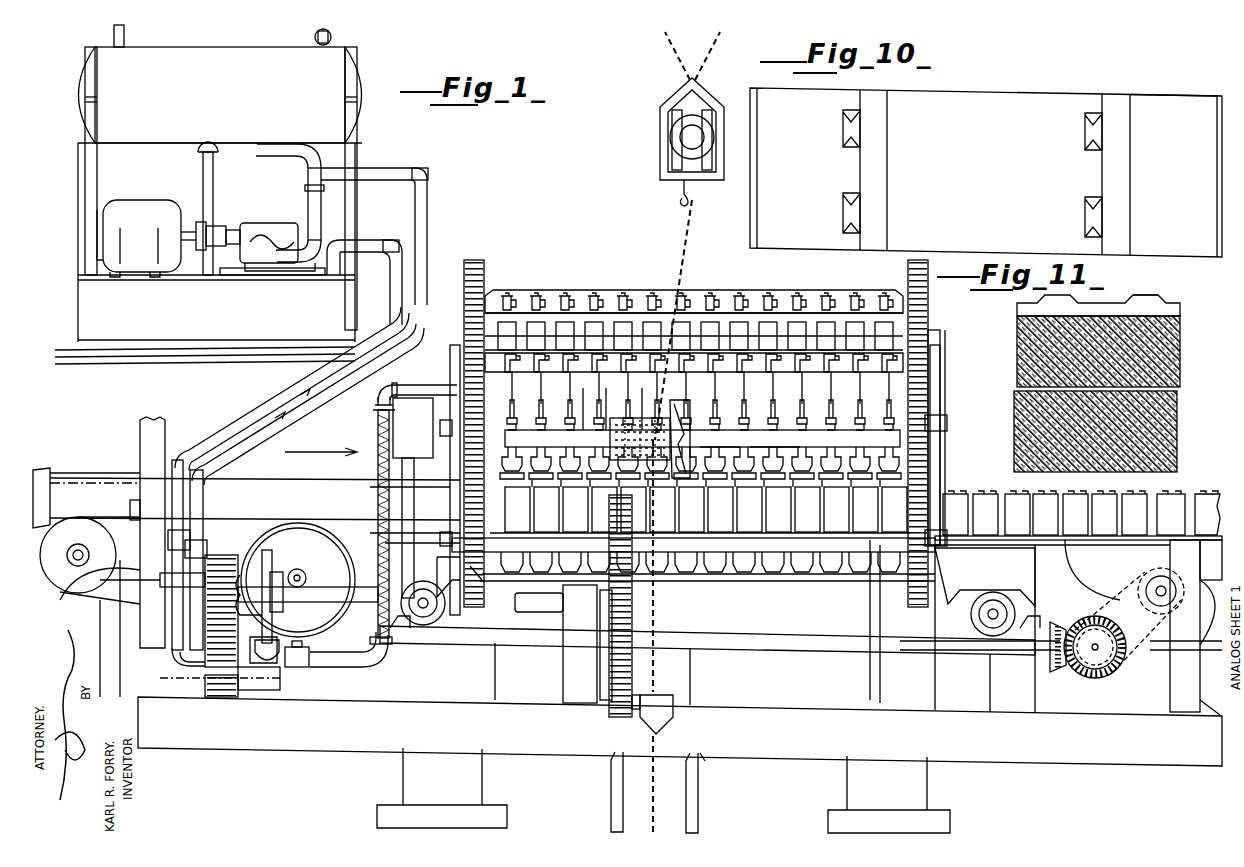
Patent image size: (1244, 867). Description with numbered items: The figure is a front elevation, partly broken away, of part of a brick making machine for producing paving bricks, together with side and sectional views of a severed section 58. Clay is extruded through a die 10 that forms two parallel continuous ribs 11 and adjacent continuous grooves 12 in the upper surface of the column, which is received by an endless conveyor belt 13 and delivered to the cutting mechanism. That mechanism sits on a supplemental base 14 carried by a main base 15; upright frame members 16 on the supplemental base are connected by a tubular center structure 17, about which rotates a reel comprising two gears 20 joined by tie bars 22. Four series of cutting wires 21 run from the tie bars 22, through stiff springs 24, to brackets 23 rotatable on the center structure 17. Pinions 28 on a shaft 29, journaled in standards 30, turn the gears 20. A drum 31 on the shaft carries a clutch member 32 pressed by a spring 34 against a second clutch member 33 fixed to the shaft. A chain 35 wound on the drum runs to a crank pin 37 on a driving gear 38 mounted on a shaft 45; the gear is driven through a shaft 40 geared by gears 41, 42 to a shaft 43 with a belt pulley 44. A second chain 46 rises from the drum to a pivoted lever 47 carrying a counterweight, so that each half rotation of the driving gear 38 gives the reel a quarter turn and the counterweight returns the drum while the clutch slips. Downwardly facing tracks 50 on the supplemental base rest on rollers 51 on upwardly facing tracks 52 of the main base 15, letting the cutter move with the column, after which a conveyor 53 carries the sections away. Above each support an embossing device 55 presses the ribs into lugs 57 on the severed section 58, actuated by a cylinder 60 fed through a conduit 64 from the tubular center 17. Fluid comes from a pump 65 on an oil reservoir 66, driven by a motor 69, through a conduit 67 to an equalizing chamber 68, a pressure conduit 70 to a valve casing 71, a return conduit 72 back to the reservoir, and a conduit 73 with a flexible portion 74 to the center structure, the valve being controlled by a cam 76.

In FIG. 1, the die 10 is at (43, 475).
In FIG. 1, the continuous ribs 11 is at (108, 478).
In FIG. 1, the continuous grooves 12 is at (82, 480).
In FIG. 10, the continuous grooves 12 is at (870, 230).
In FIG. 11, the continuous grooves 12 is at (1093, 312).
In FIG. 1, the endless conveyor belt 13 is at (236, 525).
In FIG. 1, the supplemental base 14 is at (812, 578).
In FIG. 1, the main base 15 is at (680, 765).
In FIG. 1, the upright frame members 16 is at (452, 490).
In FIG. 1, the center structure 17 is at (700, 400).
In FIG. 1, the gears 20 is at (487, 272).
In FIG. 1, the wires 21 is at (860, 508).
In FIG. 1, the tie bars 22 is at (782, 305).
In FIG. 1, the brackets 23 is at (775, 439).
In FIG. 1, the springs 24 is at (828, 322).
In FIG. 1, the pinions 28 is at (452, 402).
In FIG. 1, the shaft 29 is at (720, 439).
In FIG. 1, the standards 30 is at (494, 512).
In FIG. 1, the drum 31 is at (607, 400).
In FIG. 1, the clutch member 32 is at (668, 420).
In FIG. 1, the second clutch member 33 is at (692, 405).
In FIG. 1, the spring 34 is at (635, 400).
In FIG. 1, the chain 35 is at (656, 622).
In FIG. 1, the crank pin 37 is at (652, 705).
In FIG. 1, the driving gear 38 is at (610, 718).
In FIG. 1, the shaft 40 is at (532, 632).
In FIG. 1, the gear 41 is at (218, 698).
In FIG. 1, the gear 42 is at (222, 556).
In FIG. 1, the shaft 43 is at (160, 580).
In FIG. 1, the belt pulley 44 is at (140, 612).
In FIG. 1, the shaft 45 is at (540, 605).
In FIG. 1, the second chain 46 is at (678, 290).
In FIG. 1, the pivoted lever 47 is at (680, 140).
In FIG. 1, the downwardly facing tracks 50 is at (736, 577).
In FIG. 1, the rollers 51 is at (414, 585).
In FIG. 1, the upwardly facing tracks 52 is at (452, 630).
In FIG. 1, the conveyor 53 is at (1105, 588).
In FIG. 1, the embossing device 55 is at (548, 480).
In FIG. 1, the lugs 57 is at (1030, 503).
In FIG. 10, the lugs 57 is at (1092, 210).
In FIG. 11, the lugs 57 is at (1160, 297).
In FIG. 1, the severed section 58 is at (1100, 503).
In FIG. 10, the severed section 58 is at (1173, 165).
In FIG. 11, the severed section 58 is at (1017, 352).
In FIG. 1, the cylinder 60 is at (702, 439).
In FIG. 1, the conduit 64 is at (575, 400).
In FIG. 1, the pump 65 is at (254, 232).
In FIG. 1, the oil reservoir 66 is at (206, 205).
In FIG. 1, the conduit 67 is at (324, 210).
In FIG. 1, the equalizing chamber 68 is at (220, 84).
In FIG. 1, the motor 69 is at (130, 222).
In FIG. 1, the pressure conduit 70 is at (420, 238).
In FIG. 1, the valve casing 71 is at (318, 606).
In FIG. 1, the return conduit 72 is at (212, 435).
In FIG. 1, the conduit 73 is at (420, 385).
In FIG. 1, the flexible portion 74 is at (378, 490).
In FIG. 1, the cam 76 is at (273, 566).